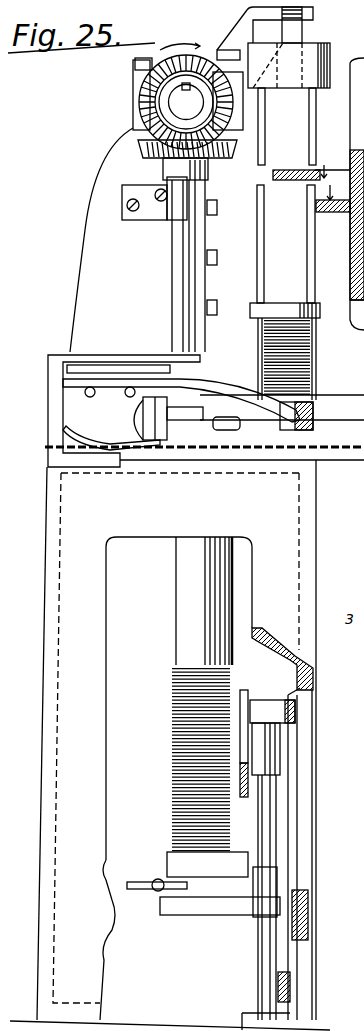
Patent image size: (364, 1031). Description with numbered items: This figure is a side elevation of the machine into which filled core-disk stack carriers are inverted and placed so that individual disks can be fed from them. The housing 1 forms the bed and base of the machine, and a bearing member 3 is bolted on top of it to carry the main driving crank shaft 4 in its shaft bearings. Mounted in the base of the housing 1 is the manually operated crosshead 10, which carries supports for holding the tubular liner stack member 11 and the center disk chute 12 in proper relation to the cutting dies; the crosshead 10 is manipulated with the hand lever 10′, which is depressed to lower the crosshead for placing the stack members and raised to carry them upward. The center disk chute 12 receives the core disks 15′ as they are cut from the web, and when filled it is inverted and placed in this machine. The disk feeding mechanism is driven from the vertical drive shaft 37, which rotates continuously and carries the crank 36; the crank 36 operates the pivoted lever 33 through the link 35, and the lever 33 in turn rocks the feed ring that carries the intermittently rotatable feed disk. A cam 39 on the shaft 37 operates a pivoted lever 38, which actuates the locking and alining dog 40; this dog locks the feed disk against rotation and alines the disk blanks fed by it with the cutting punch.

The housing 1 is at (318, 530).
The bearing member 3 is at (124, 297).
The main driving crank shaft 4 is at (187, 117).
The manually operated crosshead 10 is at (270, 760).
The hand lever 10′ is at (247, 688).
The tubular liner stack member 11 is at (180, 580).
The center disk chute 12 is at (310, 297).
The core disk 15′ is at (317, 360).
The pivoted lever 33 is at (337, 463).
The link 35 is at (125, 425).
The crank 36 is at (183, 428).
The vertical drive shaft 37 is at (180, 250).
The pivoted lever 38 is at (232, 368).
The cam 39 is at (215, 400).
The locking and alining dog 40 is at (352, 210).